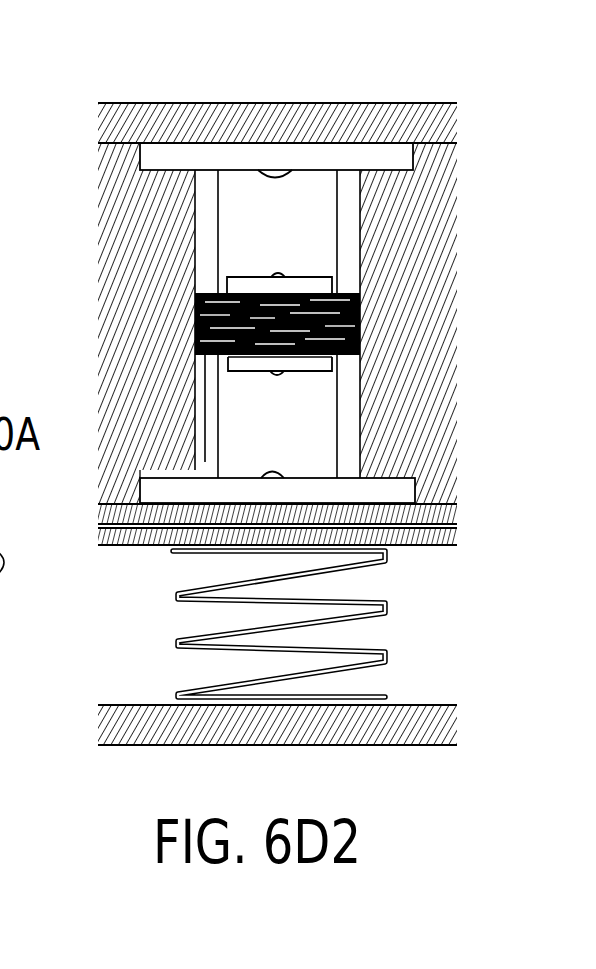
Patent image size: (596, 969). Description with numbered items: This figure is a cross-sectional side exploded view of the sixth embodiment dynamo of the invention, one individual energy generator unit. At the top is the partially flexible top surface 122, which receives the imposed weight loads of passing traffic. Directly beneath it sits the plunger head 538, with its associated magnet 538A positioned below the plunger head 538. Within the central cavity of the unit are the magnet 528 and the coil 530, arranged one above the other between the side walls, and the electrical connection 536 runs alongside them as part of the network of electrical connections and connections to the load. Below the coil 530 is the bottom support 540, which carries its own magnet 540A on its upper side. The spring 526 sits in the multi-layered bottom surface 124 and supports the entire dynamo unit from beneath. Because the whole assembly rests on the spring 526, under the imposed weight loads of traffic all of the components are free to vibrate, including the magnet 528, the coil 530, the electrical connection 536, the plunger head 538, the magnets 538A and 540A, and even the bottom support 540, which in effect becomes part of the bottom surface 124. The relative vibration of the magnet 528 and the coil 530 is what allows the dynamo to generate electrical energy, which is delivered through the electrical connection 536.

The partially flexible top surface 122 is at (282, 104).
The plunger head 538 is at (205, 163).
The magnet 538A is at (284, 176).
The magnet 528 is at (291, 279).
The coil 530 is at (358, 359).
The electrical connection 536 is at (205, 462).
The magnet 540A is at (285, 474).
The bottom support 540 is at (350, 493).
The bottom surface 124 is at (180, 528).
The spring 526 is at (357, 612).